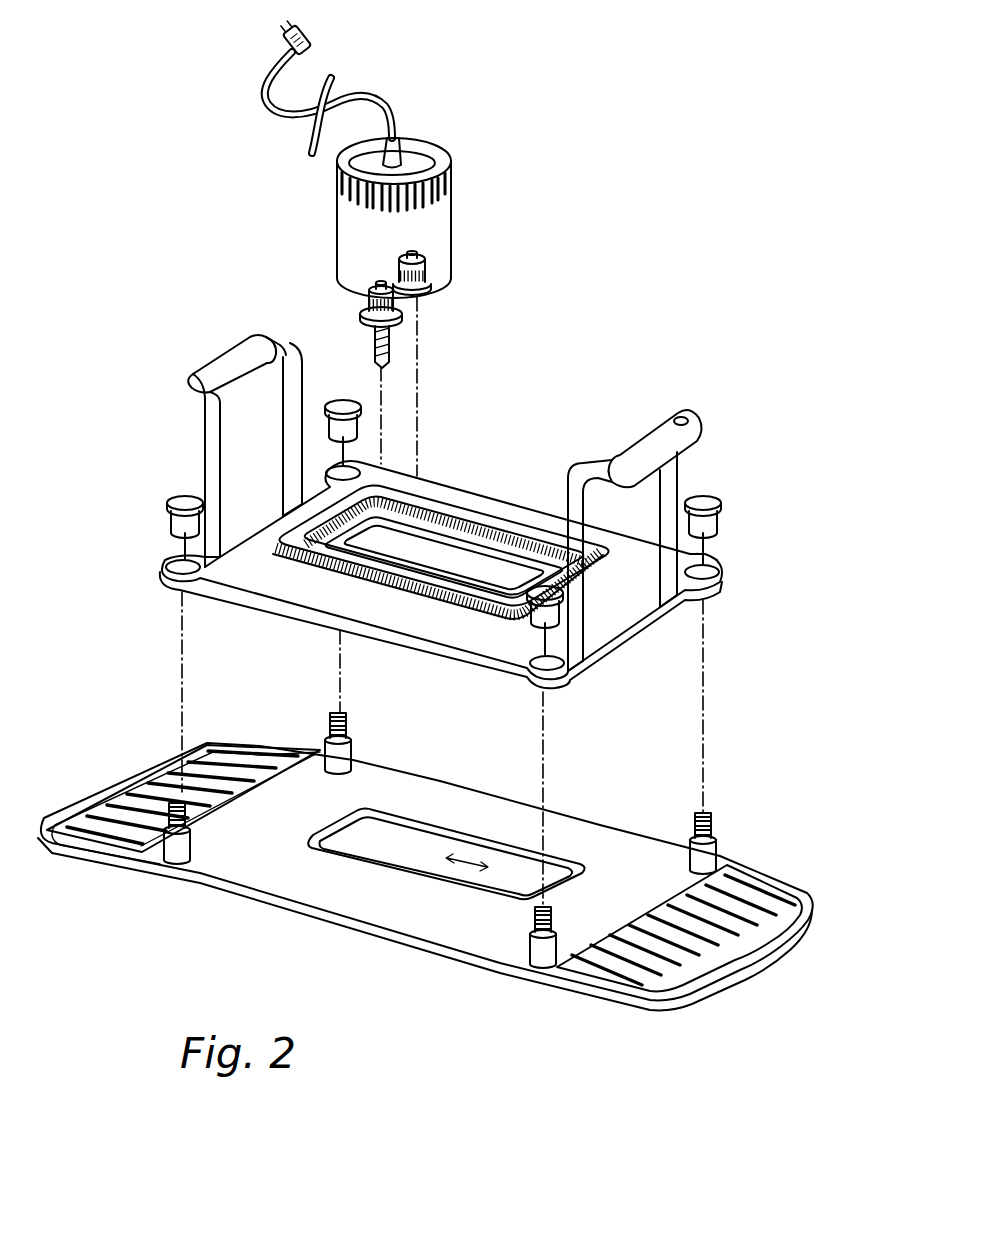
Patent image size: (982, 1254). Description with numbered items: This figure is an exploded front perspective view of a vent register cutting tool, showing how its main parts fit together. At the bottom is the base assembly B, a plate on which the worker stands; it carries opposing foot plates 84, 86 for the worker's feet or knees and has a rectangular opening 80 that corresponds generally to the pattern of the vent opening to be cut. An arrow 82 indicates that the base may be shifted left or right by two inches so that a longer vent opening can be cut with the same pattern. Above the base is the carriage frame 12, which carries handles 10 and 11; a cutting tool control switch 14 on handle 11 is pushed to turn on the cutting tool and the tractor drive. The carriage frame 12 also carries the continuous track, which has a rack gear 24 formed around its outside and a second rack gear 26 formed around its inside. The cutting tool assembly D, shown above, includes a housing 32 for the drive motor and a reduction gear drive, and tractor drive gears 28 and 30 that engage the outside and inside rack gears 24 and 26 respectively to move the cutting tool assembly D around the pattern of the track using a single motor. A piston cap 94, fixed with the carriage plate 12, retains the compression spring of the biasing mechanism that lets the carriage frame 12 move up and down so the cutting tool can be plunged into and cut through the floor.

The handle 10 is at (204, 438).
The handle 11 is at (681, 483).
The carriage frame 12 is at (470, 512).
The cutting tool control switch 14 is at (687, 413).
The rack gear 24 is at (327, 573).
The second rack gear 26 is at (423, 510).
The tractor drive gear 28 is at (440, 300).
The tractor drive gear 30 is at (366, 300).
The housing 32 is at (452, 228).
The rectangular opening 80 is at (395, 860).
The arrow 82 is at (463, 860).
The foot plate 84 is at (733, 900).
The foot plate 86 is at (133, 790).
The piston cap 94 is at (721, 567).
The base assembly B is at (217, 916).
The cutting tool assembly D is at (473, 281).